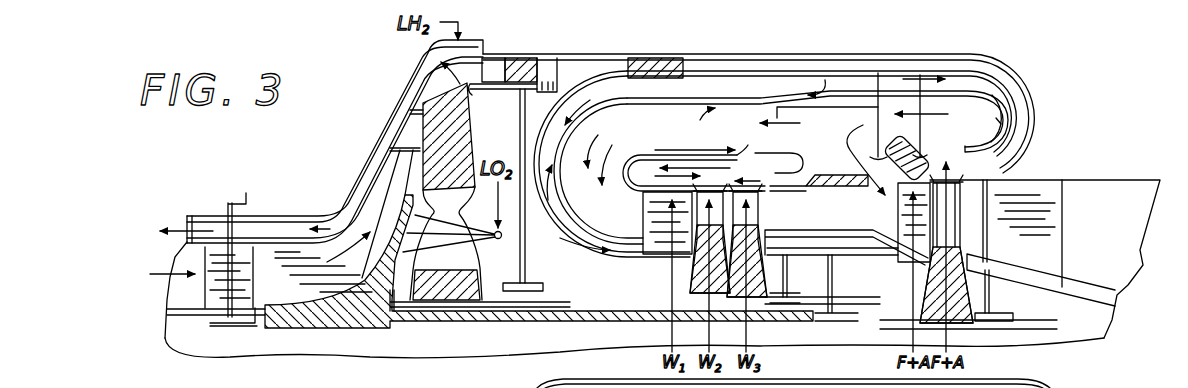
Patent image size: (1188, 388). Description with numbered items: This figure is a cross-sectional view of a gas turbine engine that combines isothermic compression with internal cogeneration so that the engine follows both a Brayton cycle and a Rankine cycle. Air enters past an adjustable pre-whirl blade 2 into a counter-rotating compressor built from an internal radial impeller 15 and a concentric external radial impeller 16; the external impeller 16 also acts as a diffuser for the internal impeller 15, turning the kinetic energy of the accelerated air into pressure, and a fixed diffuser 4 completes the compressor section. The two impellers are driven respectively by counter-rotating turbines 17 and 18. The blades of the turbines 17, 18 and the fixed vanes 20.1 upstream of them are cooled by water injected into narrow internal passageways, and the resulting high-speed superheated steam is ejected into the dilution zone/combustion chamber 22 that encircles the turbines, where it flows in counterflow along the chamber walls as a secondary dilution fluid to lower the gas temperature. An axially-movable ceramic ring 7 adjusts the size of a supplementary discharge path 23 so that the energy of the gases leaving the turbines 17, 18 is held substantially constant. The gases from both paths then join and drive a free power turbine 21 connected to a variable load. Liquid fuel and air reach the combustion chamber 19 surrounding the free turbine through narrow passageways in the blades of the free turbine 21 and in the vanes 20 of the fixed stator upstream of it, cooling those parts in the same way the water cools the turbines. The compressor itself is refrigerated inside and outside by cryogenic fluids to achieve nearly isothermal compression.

The adjustable pre-whirl blade 2 is at (207, 291).
The fixed diffuser 4 is at (540, 54).
The ceramic ring 7 is at (842, 170).
The internal radial impeller 15 is at (287, 255).
The external radial impeller 16 is at (410, 112).
The counter-rotating turbine 17 is at (703, 283).
The counter-rotating turbine 18 is at (741, 285).
The combustion chamber 19 is at (973, 113).
The vanes of fixed stator 20 is at (907, 232).
The fixed vanes 20.1 is at (655, 225).
The free power turbine 21 is at (957, 297).
The dilution zone/combustion chamber 22 is at (635, 117).
The supplementary discharge path 23 is at (921, 143).